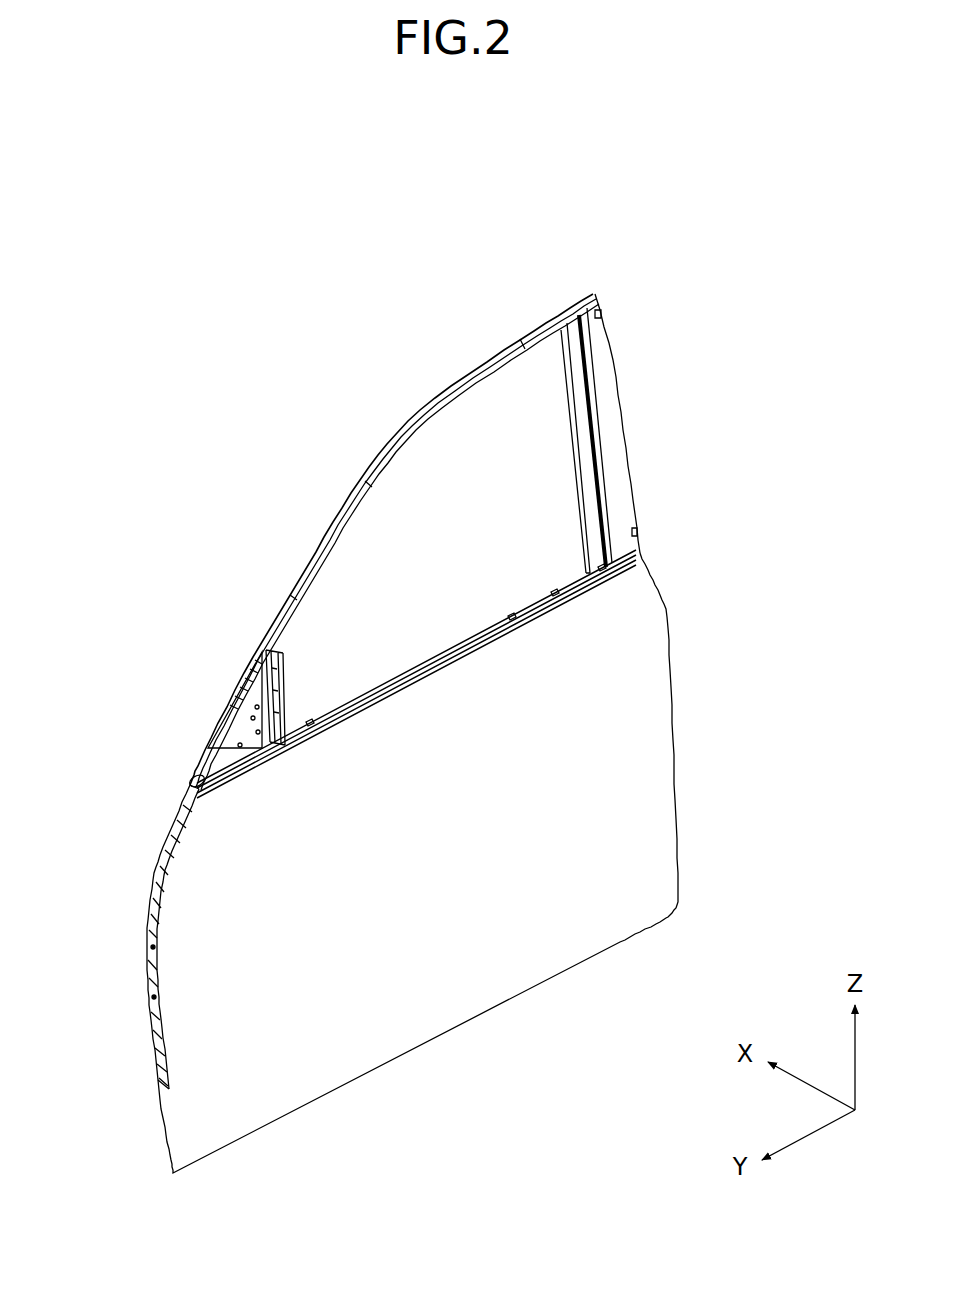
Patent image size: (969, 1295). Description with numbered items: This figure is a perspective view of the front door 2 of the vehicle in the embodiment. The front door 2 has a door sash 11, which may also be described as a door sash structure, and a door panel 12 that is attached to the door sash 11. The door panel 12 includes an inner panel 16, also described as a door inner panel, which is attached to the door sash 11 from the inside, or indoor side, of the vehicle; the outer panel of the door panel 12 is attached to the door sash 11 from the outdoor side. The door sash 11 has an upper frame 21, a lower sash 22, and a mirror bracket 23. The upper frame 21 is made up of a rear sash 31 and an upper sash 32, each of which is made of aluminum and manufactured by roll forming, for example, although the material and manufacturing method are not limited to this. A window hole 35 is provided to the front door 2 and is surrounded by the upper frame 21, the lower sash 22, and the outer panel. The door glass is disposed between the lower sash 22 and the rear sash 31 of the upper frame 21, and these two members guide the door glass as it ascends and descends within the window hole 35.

The front door 2 is at (221, 396).
The door sash 11 is at (505, 342).
The door panel 12 is at (148, 970).
The inner panel 16 is at (150, 947).
The upper frame 21 is at (510, 198).
The lower sash 22 is at (247, 680).
The mirror bracket 23 is at (215, 730).
The rear sash 31 is at (593, 300).
The upper sash 32 is at (545, 326).
The window hole 35 is at (442, 463).